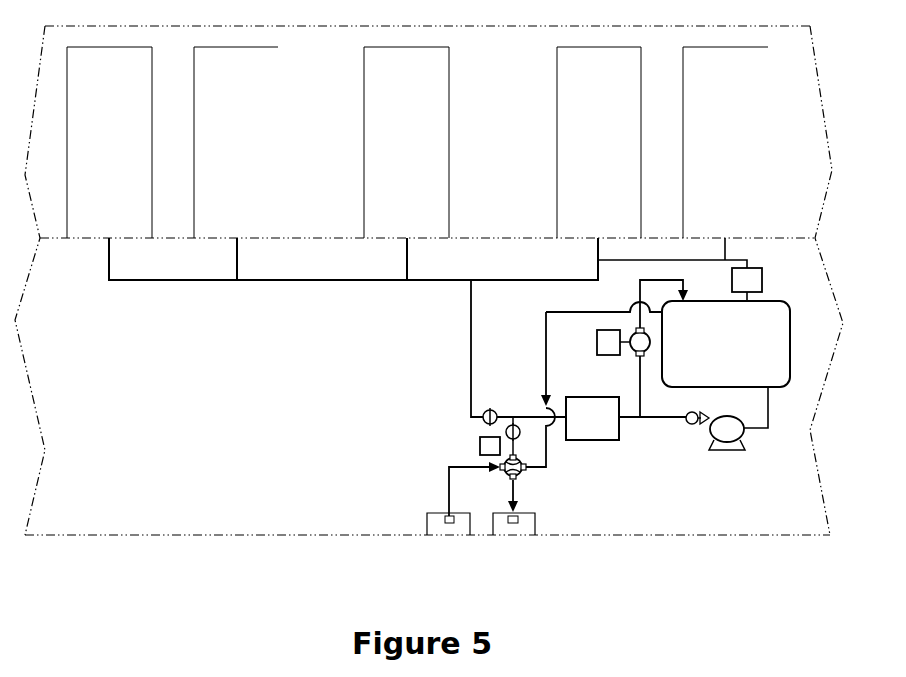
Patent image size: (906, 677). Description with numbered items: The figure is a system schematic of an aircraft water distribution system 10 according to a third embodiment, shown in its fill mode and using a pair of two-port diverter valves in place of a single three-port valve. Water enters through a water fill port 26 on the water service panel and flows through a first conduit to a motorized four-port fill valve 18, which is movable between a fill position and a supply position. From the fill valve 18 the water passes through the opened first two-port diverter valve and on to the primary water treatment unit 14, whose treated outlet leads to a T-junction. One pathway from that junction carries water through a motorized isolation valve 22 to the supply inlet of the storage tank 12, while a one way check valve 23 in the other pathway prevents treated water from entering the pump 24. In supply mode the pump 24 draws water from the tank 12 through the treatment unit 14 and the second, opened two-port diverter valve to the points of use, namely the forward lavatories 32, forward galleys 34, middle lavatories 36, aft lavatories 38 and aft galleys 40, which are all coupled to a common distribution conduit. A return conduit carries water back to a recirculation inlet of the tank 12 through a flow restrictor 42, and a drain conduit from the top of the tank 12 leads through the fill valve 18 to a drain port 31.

The water distribution system 10 is at (277, 413).
The storage tank 12 is at (791, 343).
The primary water treatment unit 14 is at (592, 441).
The fill valve 18 is at (522, 480).
The isolation valve 22 is at (548, 333).
The one way check valve 23 is at (690, 425).
The pump 24 is at (728, 450).
The water fill port 26 is at (460, 562).
The drain port 31 is at (512, 562).
The forward lavatories 32 is at (77, 240).
The forward galleys 34 is at (227, 239).
The middle lavatories 36 is at (374, 240).
The aft lavatories 38 is at (555, 165).
The aft galleys 40 is at (768, 143).
The flow restrictor 42 is at (764, 280).